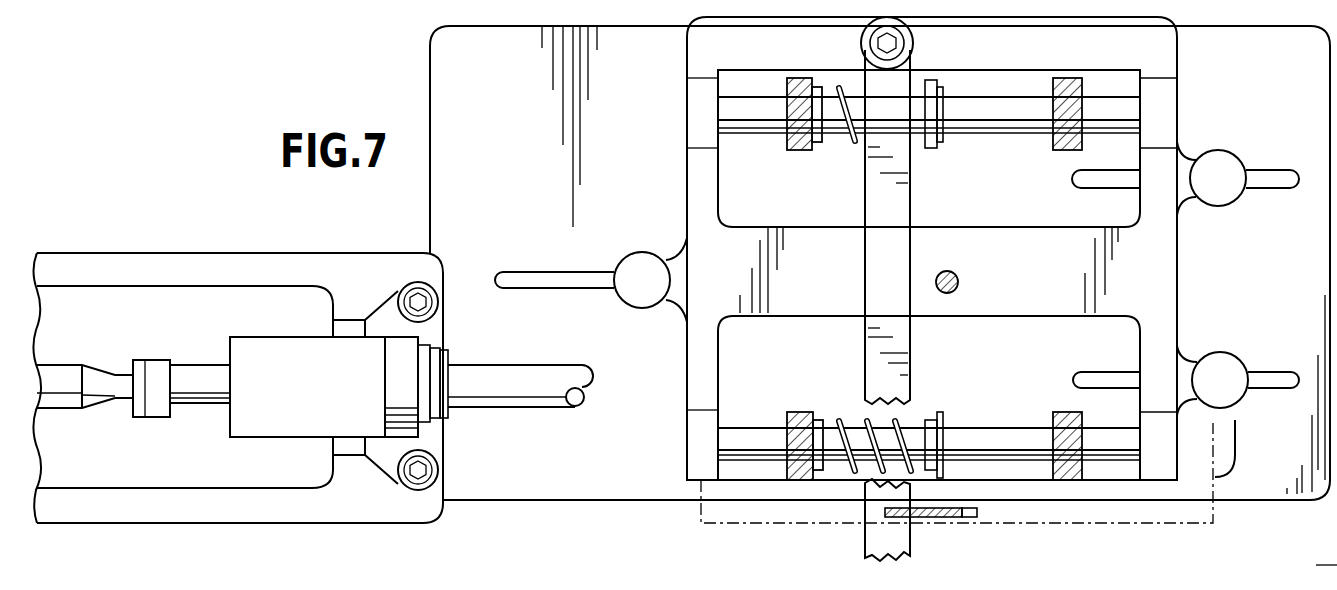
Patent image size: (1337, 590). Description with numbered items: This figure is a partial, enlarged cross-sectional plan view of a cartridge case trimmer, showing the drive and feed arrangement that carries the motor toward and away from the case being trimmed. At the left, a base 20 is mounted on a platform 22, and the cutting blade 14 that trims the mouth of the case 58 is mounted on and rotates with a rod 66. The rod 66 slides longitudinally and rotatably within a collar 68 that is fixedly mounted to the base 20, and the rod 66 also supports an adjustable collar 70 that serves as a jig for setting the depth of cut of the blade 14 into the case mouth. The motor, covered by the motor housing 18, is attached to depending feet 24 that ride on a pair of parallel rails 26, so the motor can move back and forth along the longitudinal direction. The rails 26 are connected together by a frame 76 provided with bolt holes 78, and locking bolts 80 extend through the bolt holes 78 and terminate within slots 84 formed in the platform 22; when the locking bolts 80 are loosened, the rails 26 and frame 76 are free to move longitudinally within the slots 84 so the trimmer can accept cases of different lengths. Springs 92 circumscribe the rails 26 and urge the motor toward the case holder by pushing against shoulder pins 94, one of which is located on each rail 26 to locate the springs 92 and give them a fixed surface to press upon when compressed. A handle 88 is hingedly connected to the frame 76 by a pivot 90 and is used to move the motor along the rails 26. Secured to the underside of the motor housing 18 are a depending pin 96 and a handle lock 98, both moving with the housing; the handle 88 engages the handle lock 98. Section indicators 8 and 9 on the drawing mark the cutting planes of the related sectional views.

The section line 8- 8 is at (1218, 138).
The section line 9- 9 is at (615, 535).
The cutting blade 14 is at (140, 360).
The motor housing 18 is at (1110, 525).
The base 20 is at (298, 253).
The platform 22 is at (1283, 500).
The depending feet 24 is at (800, 150).
The rails 26 is at (995, 133).
The case 58 is at (72, 362).
The rod 66 is at (540, 410).
The collar 68 is at (270, 437).
The adjustable collar 70 is at (448, 357).
The frame 76 is at (687, 158).
The bolt holes 78 is at (628, 330).
The locking bolts 80 is at (645, 253).
The slots 84 is at (570, 288).
The handle 88 is at (865, 270).
The pivot 90 is at (913, 45).
The springs 92 is at (845, 140).
The shoulder pins 94 is at (938, 142).
The depending pin 96 is at (958, 282).
The handle lock 98 is at (950, 518).